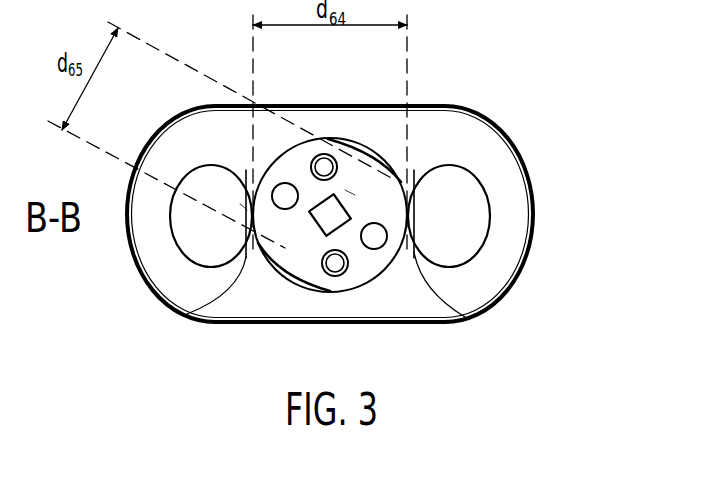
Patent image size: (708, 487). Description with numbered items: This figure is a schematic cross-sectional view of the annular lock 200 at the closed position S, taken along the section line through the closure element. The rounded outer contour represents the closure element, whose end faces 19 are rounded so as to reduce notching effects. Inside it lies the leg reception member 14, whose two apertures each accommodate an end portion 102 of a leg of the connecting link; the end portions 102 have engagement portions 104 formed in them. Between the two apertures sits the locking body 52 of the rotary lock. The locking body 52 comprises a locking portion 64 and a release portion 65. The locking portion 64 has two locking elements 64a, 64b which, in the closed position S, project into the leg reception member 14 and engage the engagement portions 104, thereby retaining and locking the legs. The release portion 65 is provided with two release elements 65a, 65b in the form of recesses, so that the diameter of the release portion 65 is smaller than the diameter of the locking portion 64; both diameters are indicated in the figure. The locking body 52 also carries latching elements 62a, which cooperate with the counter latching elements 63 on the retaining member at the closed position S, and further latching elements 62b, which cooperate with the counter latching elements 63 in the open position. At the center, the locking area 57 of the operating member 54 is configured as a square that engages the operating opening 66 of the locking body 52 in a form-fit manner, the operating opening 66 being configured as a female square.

The leg reception member 14 is at (170, 234).
The end faces 19 is at (135, 180).
The locking body 52 is at (353, 292).
The operating member 54 is at (254, 268).
The locking area 57 is at (277, 184).
The latching elements 62a is at (344, 150).
The further latching elements 62b is at (246, 181).
The counter latching elements 63 is at (350, 192).
The locking portion 64 is at (247, 210).
The locking element 64a is at (165, 262).
The locking element 64b is at (463, 190).
The release portion 65 is at (305, 280).
The release element 65a is at (311, 234).
The release element 65b is at (389, 167).
The operating opening 66 is at (400, 152).
The end portions 102 is at (160, 165).
The engagement portions 104 is at (182, 320).
The annular lock 200 is at (534, 107).
The closed position S is at (560, 120).